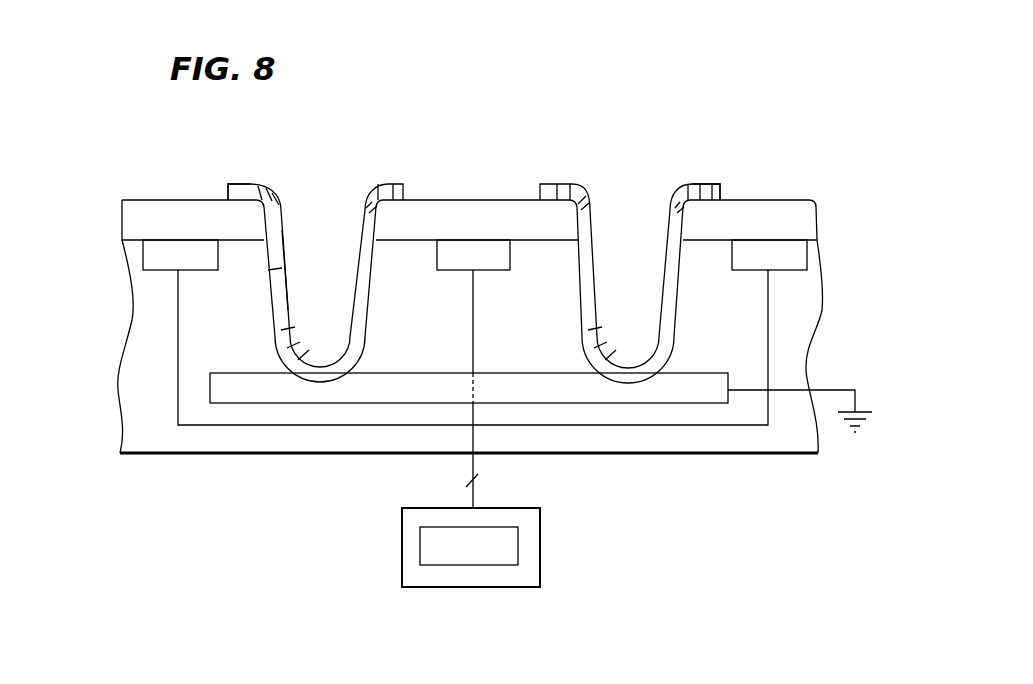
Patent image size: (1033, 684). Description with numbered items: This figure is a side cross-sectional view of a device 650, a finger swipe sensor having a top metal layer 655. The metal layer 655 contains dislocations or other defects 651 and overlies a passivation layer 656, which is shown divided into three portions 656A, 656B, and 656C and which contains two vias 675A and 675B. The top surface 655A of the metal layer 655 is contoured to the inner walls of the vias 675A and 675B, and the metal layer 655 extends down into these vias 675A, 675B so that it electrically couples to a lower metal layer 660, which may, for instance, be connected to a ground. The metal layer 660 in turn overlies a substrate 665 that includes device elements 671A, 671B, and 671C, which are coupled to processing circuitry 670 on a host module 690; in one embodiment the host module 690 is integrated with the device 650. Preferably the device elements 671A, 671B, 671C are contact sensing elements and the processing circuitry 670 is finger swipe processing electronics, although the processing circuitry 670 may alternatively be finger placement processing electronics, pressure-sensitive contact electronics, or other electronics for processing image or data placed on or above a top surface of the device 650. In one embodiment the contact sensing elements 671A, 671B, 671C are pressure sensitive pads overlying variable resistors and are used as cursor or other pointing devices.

The device 650 is at (506, 130).
The dislocations or other defects 651 is at (243, 190).
The metal layer 655 is at (722, 194).
The top surface 655A is at (309, 243).
The passivation layer 656 is at (130, 222).
The portion of passivation layer 656A is at (236, 231).
The portion of passivation layer 656B is at (501, 231).
The portion of passivation layer 656C is at (761, 231).
The metal layer 660 is at (445, 399).
The substrate 665 is at (438, 330).
The processing circuitry 670 is at (490, 557).
The device element 671A is at (205, 267).
The device element 671B is at (497, 267).
The device element 671C is at (794, 267).
The via 675A is at (328, 192).
The via 675B is at (637, 198).
The host module 690 is at (540, 526).